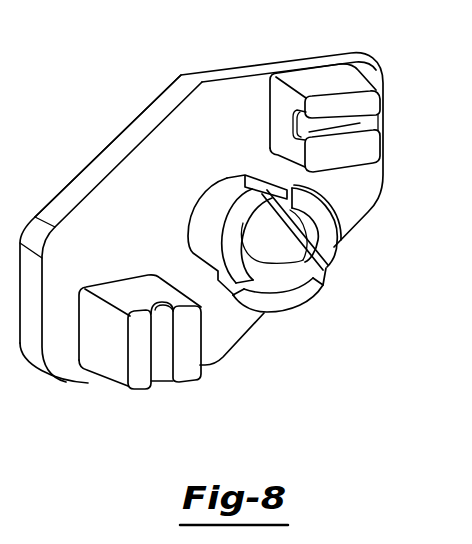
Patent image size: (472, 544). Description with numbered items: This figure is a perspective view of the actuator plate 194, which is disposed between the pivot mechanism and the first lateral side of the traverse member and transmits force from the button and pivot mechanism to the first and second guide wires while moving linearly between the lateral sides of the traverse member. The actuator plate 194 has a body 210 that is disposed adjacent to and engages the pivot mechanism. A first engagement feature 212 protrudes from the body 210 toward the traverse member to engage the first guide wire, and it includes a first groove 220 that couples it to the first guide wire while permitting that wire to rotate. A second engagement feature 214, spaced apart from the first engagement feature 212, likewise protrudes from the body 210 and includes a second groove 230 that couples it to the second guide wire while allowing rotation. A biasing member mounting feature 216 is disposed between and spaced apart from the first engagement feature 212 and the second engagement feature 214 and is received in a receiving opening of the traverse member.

The actuator plate 194 is at (170, 68).
The body 210 is at (79, 170).
The first engagement feature 212 is at (354, 83).
The first groove 220 is at (358, 120).
The biasing member mounting feature 216 is at (334, 247).
The second engagement feature 214 is at (114, 360).
The second groove 230 is at (167, 372).